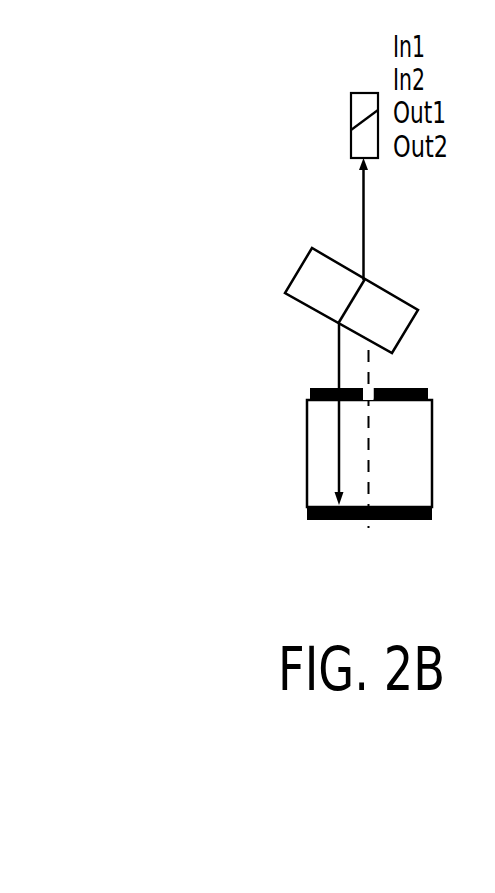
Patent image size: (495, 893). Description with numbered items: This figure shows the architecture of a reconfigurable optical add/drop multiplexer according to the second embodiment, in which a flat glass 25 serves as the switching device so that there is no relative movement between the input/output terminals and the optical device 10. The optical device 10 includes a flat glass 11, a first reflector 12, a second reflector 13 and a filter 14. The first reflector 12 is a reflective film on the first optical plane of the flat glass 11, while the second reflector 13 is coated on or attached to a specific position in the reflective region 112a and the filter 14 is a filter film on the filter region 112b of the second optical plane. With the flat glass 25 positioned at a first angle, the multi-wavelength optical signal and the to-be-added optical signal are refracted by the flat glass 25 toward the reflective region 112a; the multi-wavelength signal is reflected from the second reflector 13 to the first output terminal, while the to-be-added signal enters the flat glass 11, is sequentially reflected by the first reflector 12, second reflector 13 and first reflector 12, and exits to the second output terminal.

The optical device 10 is at (294, 433).
The flat glass 11 is at (313, 450).
The first reflector 12 is at (330, 501).
The second reflector 13 is at (310, 390).
The filter 14 is at (380, 387).
The flat glass 25 is at (382, 300).
The reflective region 112a is at (317, 414).
The filter region 112b is at (395, 439).